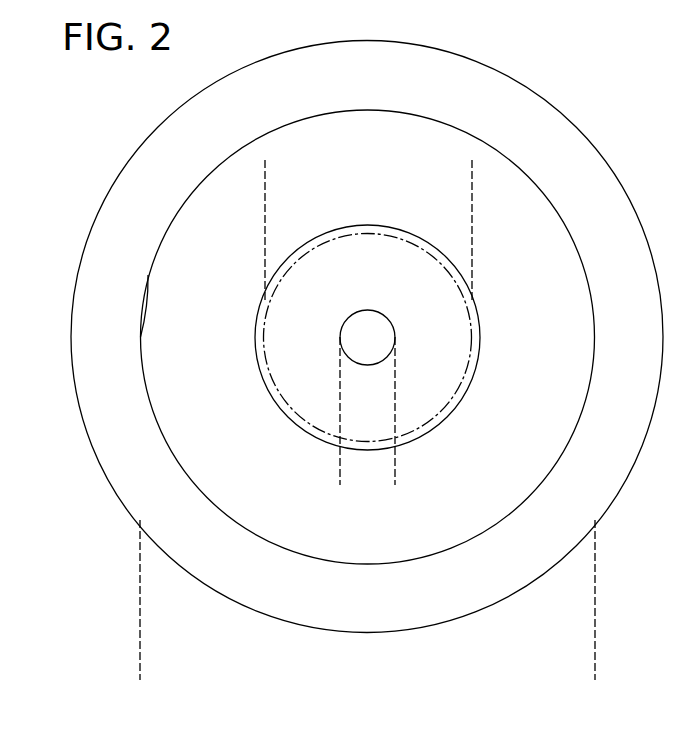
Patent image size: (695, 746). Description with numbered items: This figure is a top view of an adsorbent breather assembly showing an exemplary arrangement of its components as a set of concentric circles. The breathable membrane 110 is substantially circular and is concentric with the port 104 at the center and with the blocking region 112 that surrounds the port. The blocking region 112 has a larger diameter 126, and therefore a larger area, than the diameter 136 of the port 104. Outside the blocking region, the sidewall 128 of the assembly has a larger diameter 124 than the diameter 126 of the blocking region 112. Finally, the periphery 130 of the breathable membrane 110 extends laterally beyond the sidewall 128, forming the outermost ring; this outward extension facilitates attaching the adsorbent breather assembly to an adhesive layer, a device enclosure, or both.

The port 104 is at (393, 327).
The breathable membrane 110 is at (212, 350).
The blocking region 112 is at (433, 383).
The diameter of the sidewall 124 is at (568, 662).
The diameter of the blocking region 126 is at (443, 179).
The sidewall 128 is at (148, 275).
The periphery of the breathable membrane 130 is at (119, 357).
The diameter of the port 136 is at (458, 468).